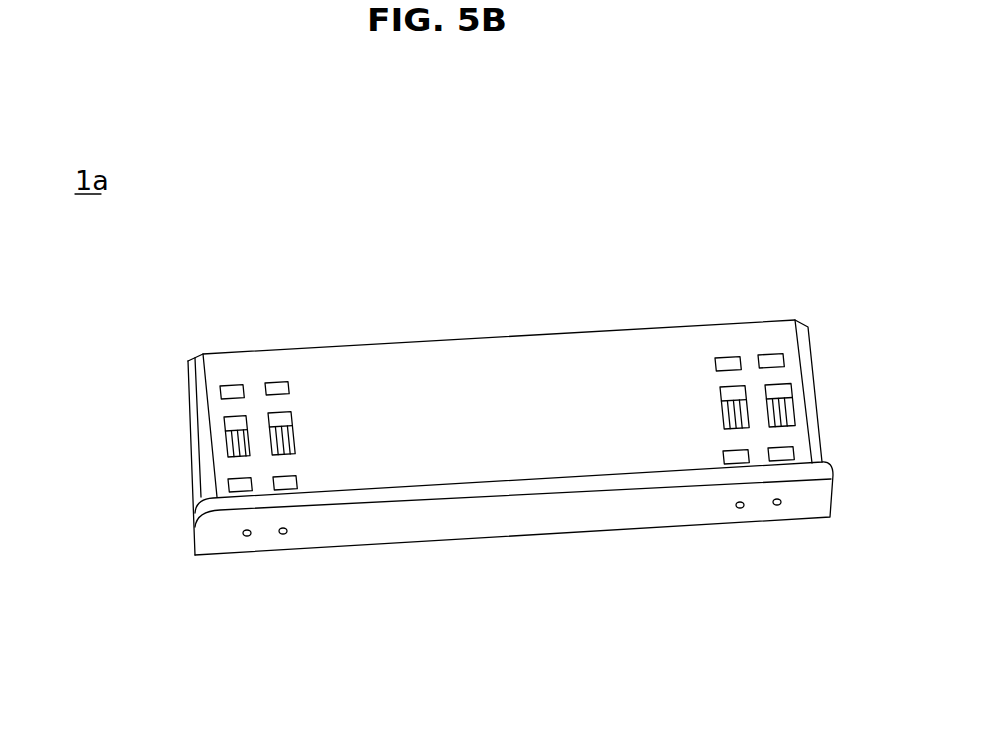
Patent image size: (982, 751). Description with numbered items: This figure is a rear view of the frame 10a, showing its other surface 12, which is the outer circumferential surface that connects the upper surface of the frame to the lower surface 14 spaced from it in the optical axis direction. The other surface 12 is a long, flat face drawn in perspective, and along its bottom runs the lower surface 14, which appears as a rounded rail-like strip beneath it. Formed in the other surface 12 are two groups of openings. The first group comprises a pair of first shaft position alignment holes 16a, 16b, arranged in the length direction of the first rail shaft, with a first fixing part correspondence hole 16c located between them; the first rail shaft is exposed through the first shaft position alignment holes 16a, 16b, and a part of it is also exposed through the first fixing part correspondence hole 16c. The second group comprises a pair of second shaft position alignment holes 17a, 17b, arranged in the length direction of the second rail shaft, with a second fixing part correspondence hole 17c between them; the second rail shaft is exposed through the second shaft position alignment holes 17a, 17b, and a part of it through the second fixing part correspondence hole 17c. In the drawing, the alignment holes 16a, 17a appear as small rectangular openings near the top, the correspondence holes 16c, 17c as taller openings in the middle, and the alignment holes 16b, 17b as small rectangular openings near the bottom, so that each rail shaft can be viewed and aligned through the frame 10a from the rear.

The frame 10a is at (564, 338).
The other surface 12 is at (415, 367).
The lower surface 14 is at (505, 529).
The first shaft position alignment hole 16a is at (280, 383).
The first shaft position alignment hole 16b is at (293, 488).
The first fixing part correspondence hole 16c is at (293, 425).
The second shaft position alignment hole 17a is at (220, 391).
The second shaft position alignment hole 17b is at (240, 490).
The second fixing part correspondence hole 17c is at (225, 433).